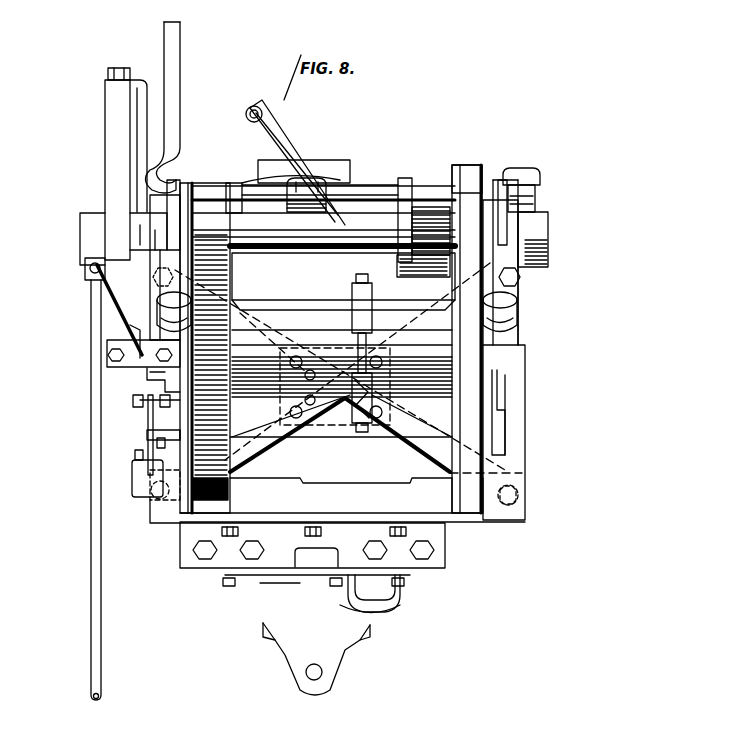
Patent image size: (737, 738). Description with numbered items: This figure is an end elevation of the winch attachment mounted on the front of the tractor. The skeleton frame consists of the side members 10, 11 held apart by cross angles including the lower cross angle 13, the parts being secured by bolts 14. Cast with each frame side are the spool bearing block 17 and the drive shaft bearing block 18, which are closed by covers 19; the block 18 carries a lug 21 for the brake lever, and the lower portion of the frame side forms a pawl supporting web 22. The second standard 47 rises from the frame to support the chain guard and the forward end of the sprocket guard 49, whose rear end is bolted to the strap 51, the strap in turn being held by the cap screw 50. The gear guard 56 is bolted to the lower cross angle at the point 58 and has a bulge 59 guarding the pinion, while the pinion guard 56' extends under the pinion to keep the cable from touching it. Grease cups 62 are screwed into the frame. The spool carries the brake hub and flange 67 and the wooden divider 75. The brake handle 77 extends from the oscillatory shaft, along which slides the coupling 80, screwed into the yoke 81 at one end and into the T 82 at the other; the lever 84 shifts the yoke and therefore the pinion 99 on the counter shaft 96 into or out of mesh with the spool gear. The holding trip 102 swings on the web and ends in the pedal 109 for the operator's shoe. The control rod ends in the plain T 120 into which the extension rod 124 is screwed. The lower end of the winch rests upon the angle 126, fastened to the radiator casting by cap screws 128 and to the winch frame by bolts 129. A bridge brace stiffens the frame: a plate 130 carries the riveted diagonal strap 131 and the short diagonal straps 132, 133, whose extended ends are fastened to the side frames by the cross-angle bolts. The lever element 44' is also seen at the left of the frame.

The side member 10 is at (152, 302).
The side member 11 is at (525, 436).
The lower cross angle 13 is at (432, 513).
The bolts 14 is at (528, 493).
The spool bearing block 17 is at (510, 378).
The drive shaft bearing block 18 is at (547, 256).
The cover 19 is at (548, 233).
The lug 21 is at (496, 182).
The pawl supporting web 22 is at (173, 418).
The lever 44' is at (88, 311).
The second standard 47 is at (145, 110).
The sprocket guard 49 is at (110, 160).
The cap screw 50 is at (108, 358).
The strap 51 is at (120, 367).
The gear guard 56 is at (476, 318).
The pinion guard 56' is at (409, 266).
The point of attachment to lower cross angle 58 is at (222, 367).
The bulge 59 is at (460, 200).
The grease cup 62 is at (182, 328).
The brake hub and flange 67 is at (520, 320).
The divider 75 is at (352, 300).
The brake handle 77 is at (181, 90).
The coupling 80 is at (372, 190).
The yoke 81 is at (405, 177).
The T 82 is at (307, 212).
The lever 84 is at (292, 163).
The counter shaft 96 is at (343, 281).
The pinion 99 is at (430, 210).
The trip 102 is at (147, 433).
The pedal 109 is at (132, 490).
The plain T 120 is at (86, 265).
The rod 124 is at (91, 440).
The angle 126 is at (188, 558).
The cap screws 128 is at (252, 560).
The bolts 129 is at (313, 527).
The plate 130 is at (333, 420).
The diagonal strap 131 is at (262, 440).
The short diagonal strap 132 is at (292, 344).
The short diagonal strap 133 is at (404, 434).